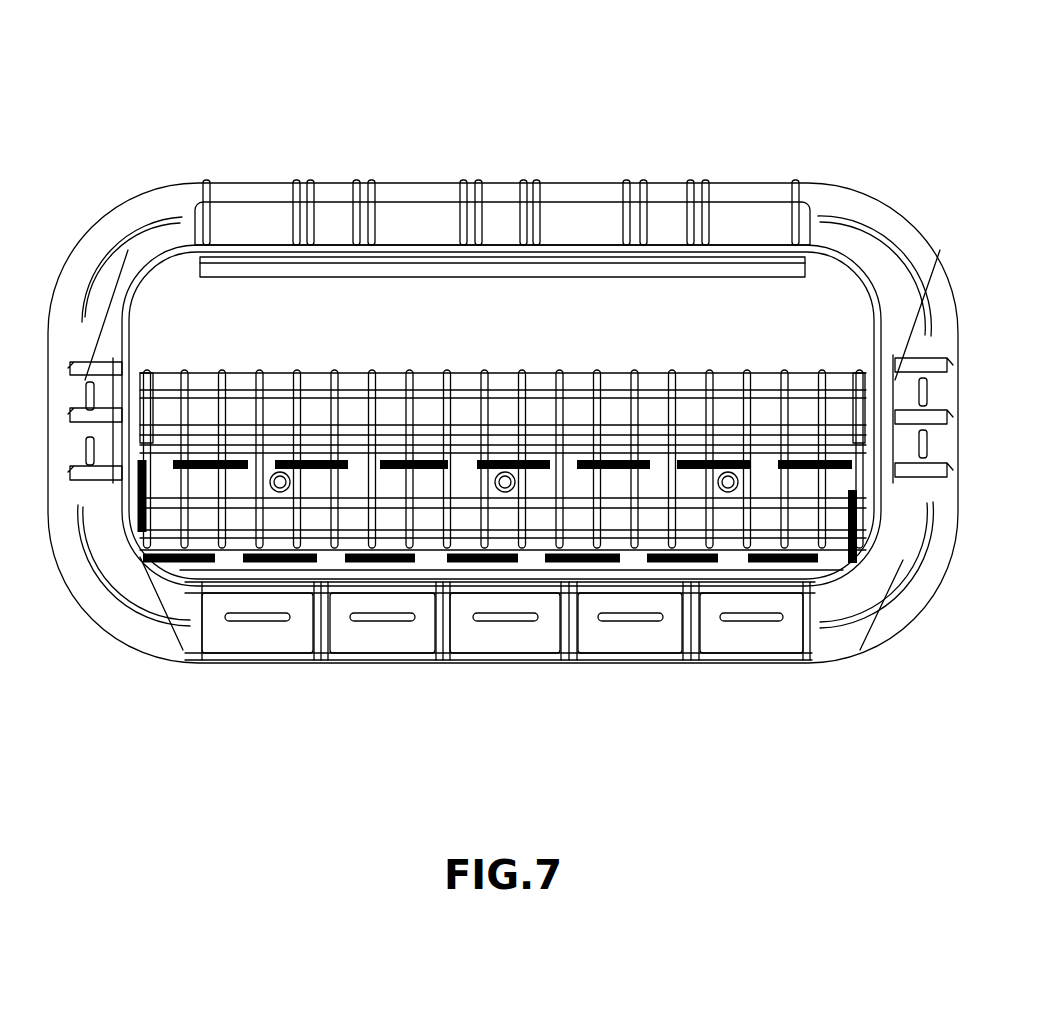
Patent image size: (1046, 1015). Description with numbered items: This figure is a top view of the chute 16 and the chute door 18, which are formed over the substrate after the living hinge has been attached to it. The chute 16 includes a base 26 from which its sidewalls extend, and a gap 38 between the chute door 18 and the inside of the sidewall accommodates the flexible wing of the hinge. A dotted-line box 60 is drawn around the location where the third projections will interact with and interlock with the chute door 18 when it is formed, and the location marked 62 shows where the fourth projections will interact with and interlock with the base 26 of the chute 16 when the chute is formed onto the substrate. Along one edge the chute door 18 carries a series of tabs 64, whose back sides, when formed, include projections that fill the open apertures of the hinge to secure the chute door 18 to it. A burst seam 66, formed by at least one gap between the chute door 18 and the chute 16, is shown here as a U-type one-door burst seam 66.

The chute 16 is at (260, 185).
The chute door 18 is at (503, 275).
The base 26 is at (142, 230).
The gap 38 is at (198, 307).
The dotted-line box 60 is at (143, 560).
The location of fourth projections interlock 62 is at (903, 578).
The tabs 64 is at (693, 378).
The burst seam 66 is at (362, 578).